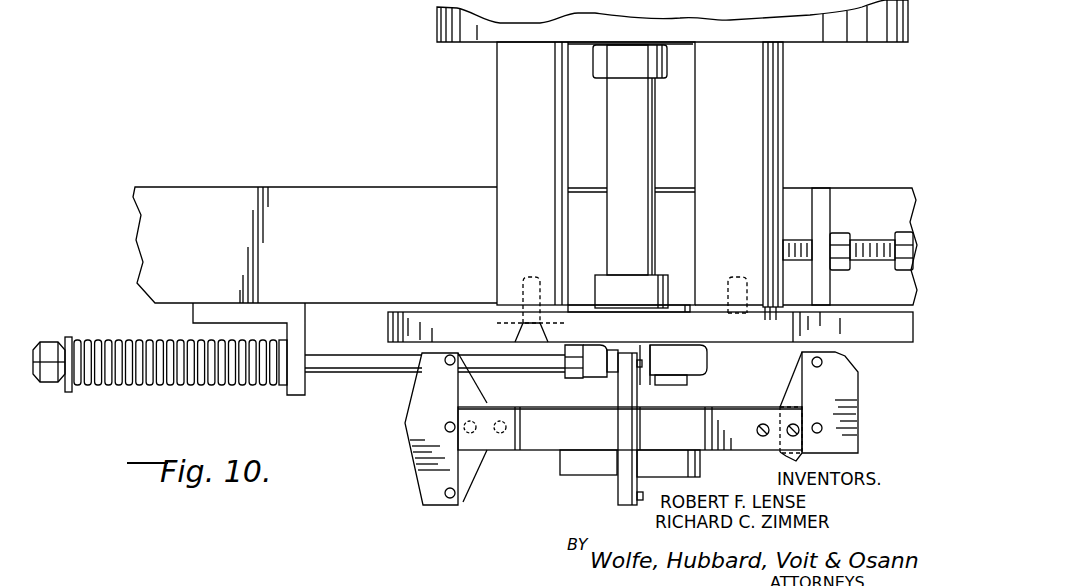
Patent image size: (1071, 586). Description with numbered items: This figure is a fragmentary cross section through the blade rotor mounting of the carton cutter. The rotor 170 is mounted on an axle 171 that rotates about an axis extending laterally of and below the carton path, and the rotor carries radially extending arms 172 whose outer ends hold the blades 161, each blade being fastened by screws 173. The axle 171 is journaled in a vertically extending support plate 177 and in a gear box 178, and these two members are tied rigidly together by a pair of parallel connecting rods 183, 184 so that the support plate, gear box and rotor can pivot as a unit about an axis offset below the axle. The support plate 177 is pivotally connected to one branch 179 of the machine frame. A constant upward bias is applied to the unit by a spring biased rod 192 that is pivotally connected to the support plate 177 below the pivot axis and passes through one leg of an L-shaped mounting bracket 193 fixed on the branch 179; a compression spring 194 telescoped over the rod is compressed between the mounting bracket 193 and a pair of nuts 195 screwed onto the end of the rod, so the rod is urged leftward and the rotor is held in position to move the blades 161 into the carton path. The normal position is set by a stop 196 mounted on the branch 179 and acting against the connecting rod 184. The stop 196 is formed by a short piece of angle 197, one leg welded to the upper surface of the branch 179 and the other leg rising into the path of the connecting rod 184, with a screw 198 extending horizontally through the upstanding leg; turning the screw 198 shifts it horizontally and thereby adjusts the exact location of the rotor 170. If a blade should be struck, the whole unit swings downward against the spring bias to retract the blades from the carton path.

The blades 161 is at (420, 465).
The rotor 170 is at (591, 455).
The axle 171 is at (650, 138).
The arms 172 is at (620, 495).
The screws 173 is at (445, 364).
The support plate 177 is at (437, 315).
The gear box 178 is at (445, 42).
The branch 179 is at (283, 198).
The connecting rod 183 is at (497, 115).
The connecting rod 184 is at (782, 92).
The spring biased rod 192 is at (342, 330).
The L-shaped mounting bracket 193 is at (290, 395).
The compression spring 194 is at (195, 385).
The nuts 195 is at (50, 340).
The stop 196 is at (848, 206).
The angle 197 is at (812, 205).
The screw 198 is at (886, 182).